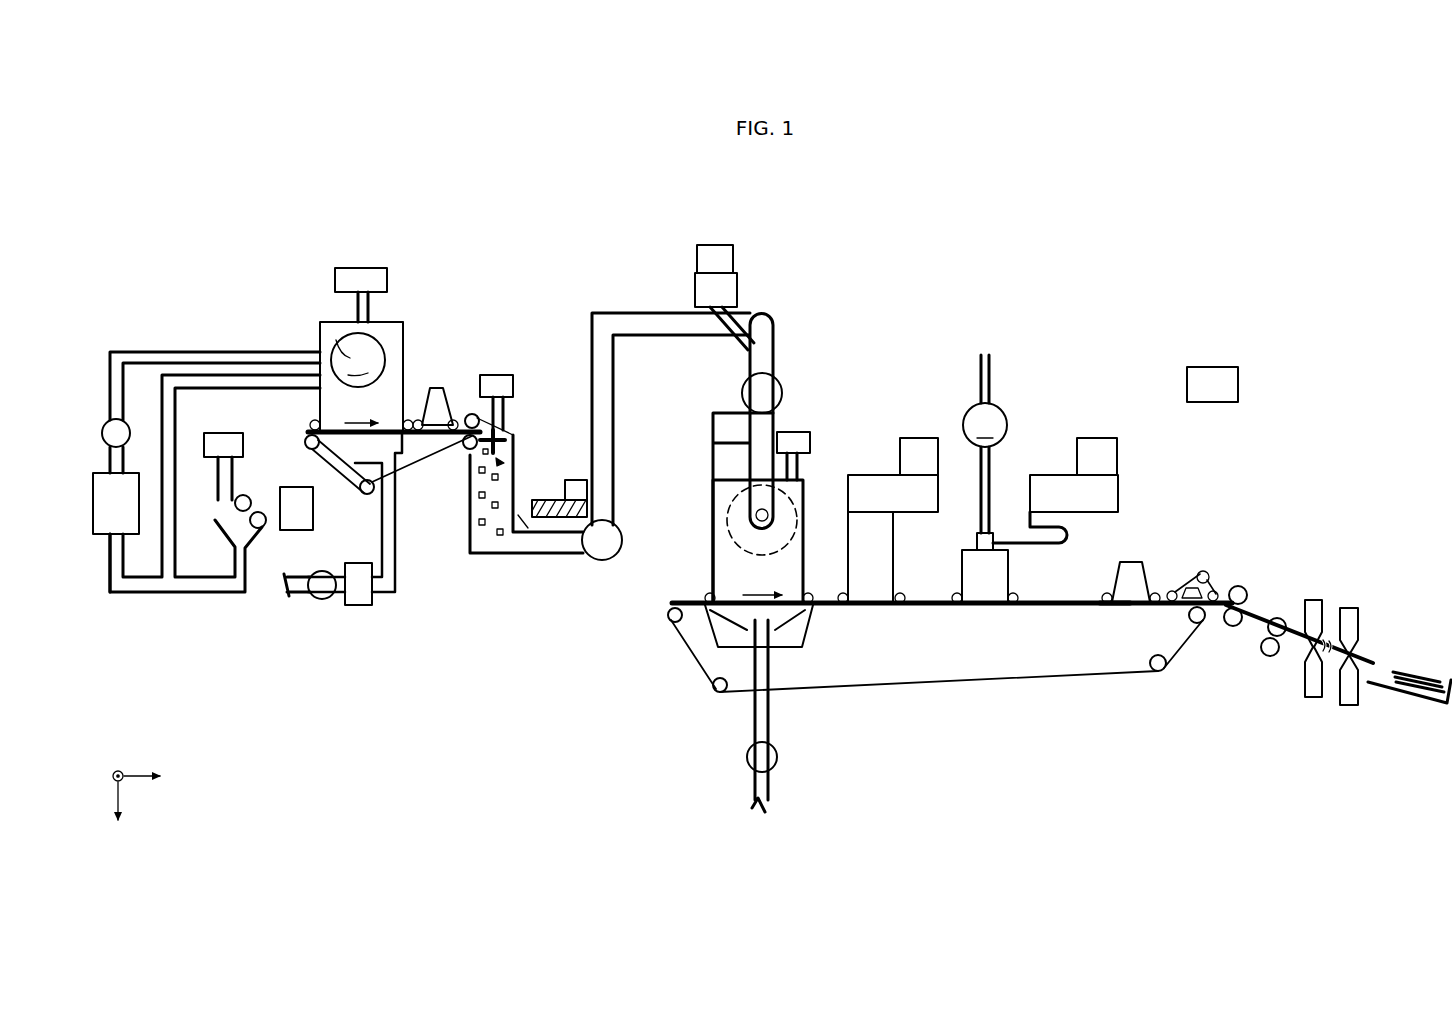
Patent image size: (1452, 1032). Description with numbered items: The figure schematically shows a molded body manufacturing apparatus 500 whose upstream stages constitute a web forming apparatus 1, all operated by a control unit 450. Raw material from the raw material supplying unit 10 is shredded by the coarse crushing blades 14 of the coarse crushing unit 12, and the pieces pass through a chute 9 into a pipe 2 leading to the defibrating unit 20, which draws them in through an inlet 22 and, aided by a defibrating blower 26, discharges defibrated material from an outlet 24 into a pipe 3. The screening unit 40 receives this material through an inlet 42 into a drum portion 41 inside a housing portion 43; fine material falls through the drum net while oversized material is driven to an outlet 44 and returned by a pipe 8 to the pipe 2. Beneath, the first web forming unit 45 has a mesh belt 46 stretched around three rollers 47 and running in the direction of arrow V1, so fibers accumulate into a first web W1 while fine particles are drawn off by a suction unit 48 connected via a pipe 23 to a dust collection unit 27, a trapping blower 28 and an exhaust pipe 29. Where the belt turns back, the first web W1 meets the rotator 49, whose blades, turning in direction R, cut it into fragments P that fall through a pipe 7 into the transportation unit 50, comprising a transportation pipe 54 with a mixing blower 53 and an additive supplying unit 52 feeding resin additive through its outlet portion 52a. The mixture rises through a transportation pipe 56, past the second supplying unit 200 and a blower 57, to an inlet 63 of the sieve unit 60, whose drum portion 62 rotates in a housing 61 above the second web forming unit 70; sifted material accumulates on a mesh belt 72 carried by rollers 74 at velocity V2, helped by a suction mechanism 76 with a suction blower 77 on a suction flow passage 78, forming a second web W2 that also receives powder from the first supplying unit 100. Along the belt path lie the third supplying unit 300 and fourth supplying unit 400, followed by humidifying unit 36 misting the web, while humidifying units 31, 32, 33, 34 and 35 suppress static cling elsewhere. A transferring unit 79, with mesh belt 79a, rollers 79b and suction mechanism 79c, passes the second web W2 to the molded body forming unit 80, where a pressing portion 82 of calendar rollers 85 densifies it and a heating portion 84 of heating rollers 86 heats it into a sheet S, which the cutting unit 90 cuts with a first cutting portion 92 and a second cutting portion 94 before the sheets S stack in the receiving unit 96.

The web forming apparatus 1 is at (958, 295).
The pipe 2 is at (197, 590).
The pipe 3 is at (150, 353).
The pipe 7 is at (505, 483).
The pipe 8 is at (262, 378).
The chute 9 is at (222, 532).
The raw material supplying unit 10 is at (292, 537).
The coarse crushing unit 12 is at (218, 516).
The coarse crushing blades 14 is at (262, 505).
The defibrating unit 20 is at (100, 545).
The inlet 22 is at (125, 534).
The pipe 23 is at (389, 596).
The outlet 24 is at (130, 478).
The defibrating blower 26 is at (128, 428).
The dust collection unit 27 is at (357, 607).
The trapping blower 28 is at (321, 600).
The pipe 29 is at (291, 597).
The humidifying unit 31 is at (226, 432).
The humidifying unit 32 is at (365, 268).
The humidifying unit 33 is at (497, 375).
The humidifying unit 34 is at (812, 440).
The humidifying unit 35 is at (440, 390).
The humidifying unit 36 is at (1133, 565).
The screening unit 40 is at (413, 303).
The drum portion 41 is at (384, 353).
The inlet 42 is at (336, 340).
The housing portion 43 is at (405, 325).
The outlet 44 is at (348, 375).
The first web forming unit 45 is at (430, 537).
The mesh belt 46 is at (412, 475).
The rollers 47 is at (306, 438).
The suction unit 48 is at (350, 463).
The rotator 49 is at (500, 436).
The transportation unit 50 is at (600, 622).
The additive supplying unit 52 is at (575, 480).
The outlet portion 52a is at (548, 518).
The mixing blower 53 is at (603, 561).
The transportation pipe 54 is at (513, 545).
The transportation pipe 56 is at (775, 345).
The blower 57 is at (783, 393).
The sieve unit 60 is at (657, 513).
The housing 61 is at (711, 493).
The drum portion 62 is at (727, 550).
The inlet 63 is at (755, 512).
The second web forming unit 70 is at (905, 705).
The mesh belt 72 is at (688, 605).
The rollers 74 is at (675, 623).
The suction mechanism 76 is at (775, 636).
The suction blower 77 is at (778, 757).
The suction flow passage 78 is at (770, 800).
The transferring unit 79 is at (1268, 485).
The mesh belt 79a is at (1172, 590).
The rollers 79b is at (1208, 572).
The suction mechanism 79c is at (1192, 585).
The molded body forming unit 80 is at (1260, 537).
The pressing portion 82 is at (1247, 587).
The heating portion 84 is at (1281, 616).
The calendar rollers 85 is at (1237, 628).
The heating rollers 86 is at (1272, 657).
The cutting unit 90 is at (1387, 537).
The first cutting portion 92 is at (1319, 600).
The second cutting portion 94 is at (1351, 608).
The receiving unit 96 is at (1398, 706).
The first supplying unit 100 is at (705, 450).
The second supplying unit 200 is at (745, 262).
The third supplying unit 300 is at (918, 420).
The fourth supplying unit 400 is at (1033, 390).
The control unit 450 is at (1215, 367).
The molded body manufacturing apparatus 500 is at (995, 230).
The fragments P is at (483, 530).
The arrow R is at (505, 462).
The sheet S is at (1290, 651).
The first conveying speed V1 is at (361, 410).
The velocity V2 is at (762, 581).
The first web W1 is at (432, 455).
The second web W2 is at (1085, 609).